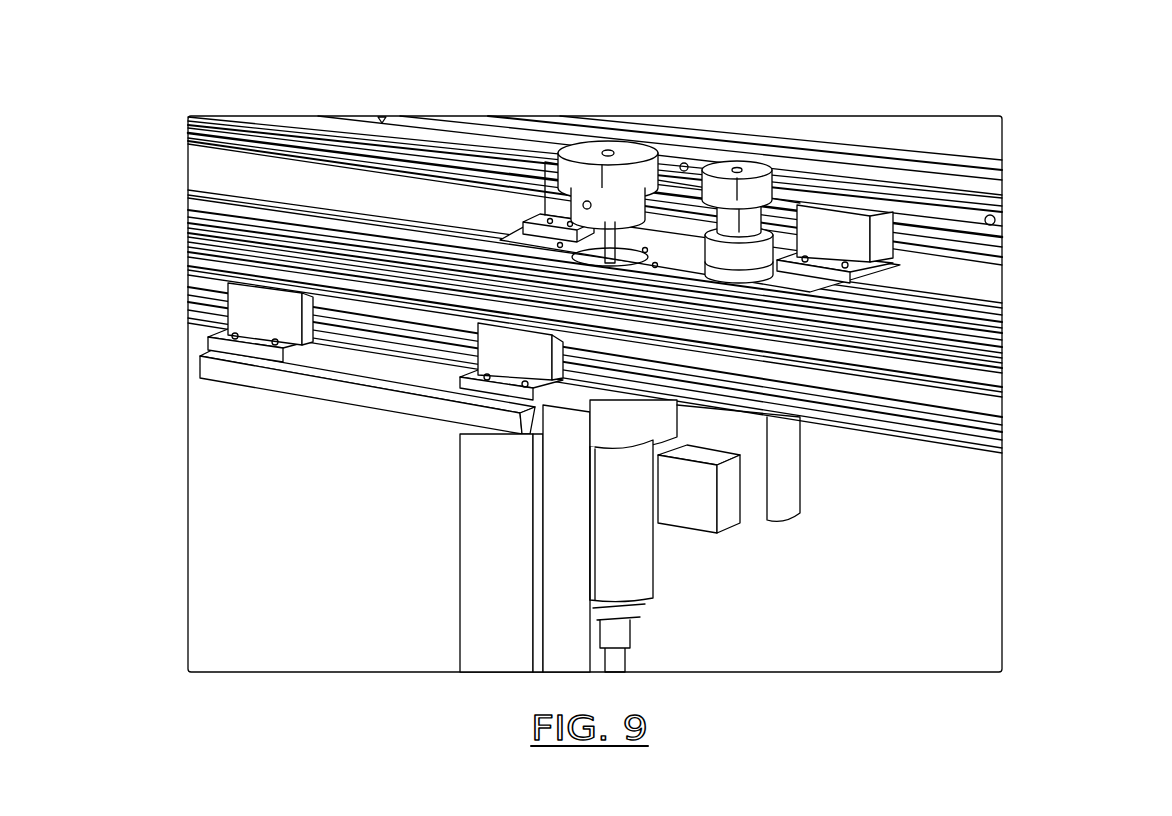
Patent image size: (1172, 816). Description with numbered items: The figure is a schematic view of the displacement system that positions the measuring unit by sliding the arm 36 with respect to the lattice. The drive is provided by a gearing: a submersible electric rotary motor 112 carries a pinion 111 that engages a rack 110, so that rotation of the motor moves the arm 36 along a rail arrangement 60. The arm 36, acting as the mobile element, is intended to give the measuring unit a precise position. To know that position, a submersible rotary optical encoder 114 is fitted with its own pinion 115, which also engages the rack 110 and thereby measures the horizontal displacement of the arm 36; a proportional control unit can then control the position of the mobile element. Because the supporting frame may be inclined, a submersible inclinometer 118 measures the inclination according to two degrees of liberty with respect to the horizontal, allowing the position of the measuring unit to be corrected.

The rack 110 is at (476, 130).
The pinion 111 is at (640, 160).
The pinion 115 is at (760, 168).
The rail arrangement 60 is at (935, 250).
The submersible inclinometer 118 is at (385, 410).
The arm 36 is at (478, 565).
The submersible electric rotary motor 112 is at (635, 570).
The submersible rotary optical encoder 114 is at (747, 497).